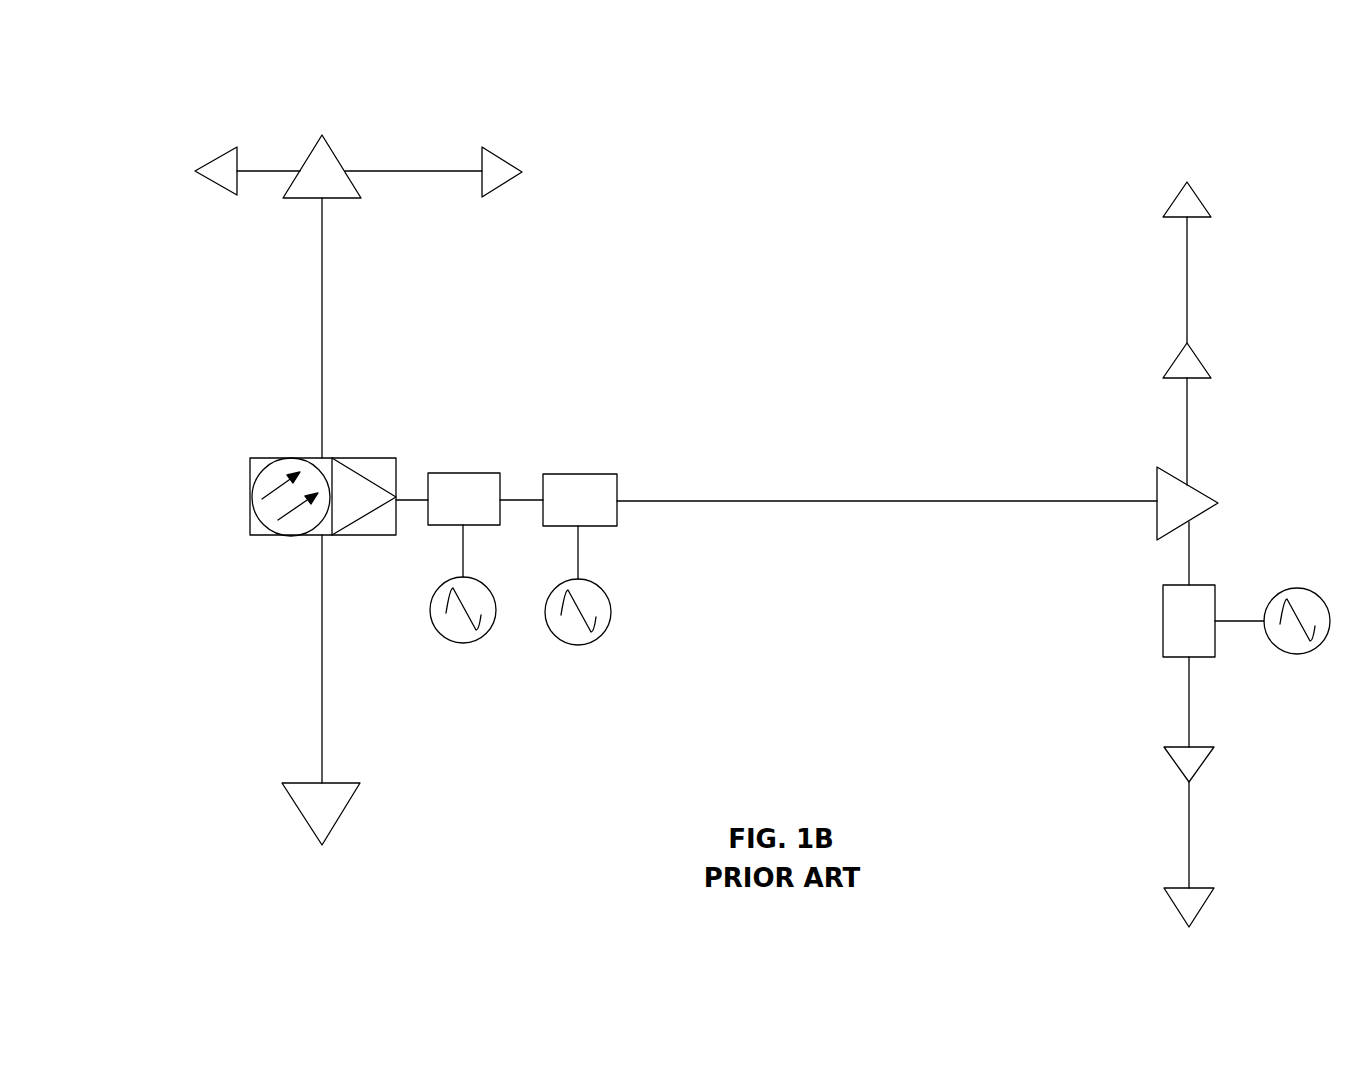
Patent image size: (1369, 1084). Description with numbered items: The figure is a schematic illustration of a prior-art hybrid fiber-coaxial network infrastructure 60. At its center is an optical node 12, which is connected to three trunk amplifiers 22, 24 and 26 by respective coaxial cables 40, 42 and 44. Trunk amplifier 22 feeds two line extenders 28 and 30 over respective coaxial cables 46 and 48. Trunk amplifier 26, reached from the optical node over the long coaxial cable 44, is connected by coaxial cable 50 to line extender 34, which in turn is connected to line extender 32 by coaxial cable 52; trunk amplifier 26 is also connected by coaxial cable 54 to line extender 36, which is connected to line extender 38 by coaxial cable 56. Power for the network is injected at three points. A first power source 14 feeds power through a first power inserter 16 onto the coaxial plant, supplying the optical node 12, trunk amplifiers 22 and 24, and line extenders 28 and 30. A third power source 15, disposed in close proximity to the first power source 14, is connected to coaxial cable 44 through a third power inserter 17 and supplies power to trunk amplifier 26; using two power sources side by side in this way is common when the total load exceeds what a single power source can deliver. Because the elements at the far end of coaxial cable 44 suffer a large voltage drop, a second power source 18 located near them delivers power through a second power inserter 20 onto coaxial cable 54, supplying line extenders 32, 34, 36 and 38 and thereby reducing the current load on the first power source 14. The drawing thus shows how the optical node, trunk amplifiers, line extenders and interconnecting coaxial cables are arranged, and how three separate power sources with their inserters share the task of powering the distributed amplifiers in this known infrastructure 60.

The HFC network infrastructure 60 is at (163, 118).
The optical node 12 is at (270, 458).
The first power source 14 is at (496, 600).
The third power source 15 is at (611, 602).
The first power inserter 16 is at (443, 473).
The third power inserter 17 is at (557, 474).
The second power source 18 is at (1305, 653).
The second power inserter 20 is at (1163, 596).
The trunk amplifier 22 is at (337, 140).
The trunk amplifier 24 is at (343, 812).
The trunk amplifier 26 is at (1206, 492).
The line extender 28 is at (220, 190).
The line extender 30 is at (505, 188).
The line extender 32 is at (1201, 200).
The line extender 34 is at (1201, 365).
The line extender 36 is at (1203, 765).
The line extender 38 is at (1205, 905).
The coaxial cable 40 is at (323, 318).
The coaxial cable 42 is at (323, 678).
The coaxial cable 44 is at (868, 500).
The coaxial cable 46 is at (258, 167).
The coaxial cable 48 is at (447, 170).
The coaxial cable 50 is at (1187, 417).
The coaxial cable 52 is at (1187, 287).
The coaxial cable 54 is at (1189, 705).
The coaxial cable 56 is at (1189, 843).